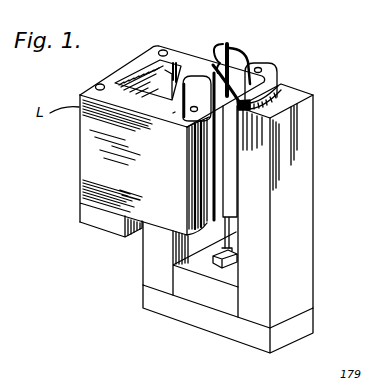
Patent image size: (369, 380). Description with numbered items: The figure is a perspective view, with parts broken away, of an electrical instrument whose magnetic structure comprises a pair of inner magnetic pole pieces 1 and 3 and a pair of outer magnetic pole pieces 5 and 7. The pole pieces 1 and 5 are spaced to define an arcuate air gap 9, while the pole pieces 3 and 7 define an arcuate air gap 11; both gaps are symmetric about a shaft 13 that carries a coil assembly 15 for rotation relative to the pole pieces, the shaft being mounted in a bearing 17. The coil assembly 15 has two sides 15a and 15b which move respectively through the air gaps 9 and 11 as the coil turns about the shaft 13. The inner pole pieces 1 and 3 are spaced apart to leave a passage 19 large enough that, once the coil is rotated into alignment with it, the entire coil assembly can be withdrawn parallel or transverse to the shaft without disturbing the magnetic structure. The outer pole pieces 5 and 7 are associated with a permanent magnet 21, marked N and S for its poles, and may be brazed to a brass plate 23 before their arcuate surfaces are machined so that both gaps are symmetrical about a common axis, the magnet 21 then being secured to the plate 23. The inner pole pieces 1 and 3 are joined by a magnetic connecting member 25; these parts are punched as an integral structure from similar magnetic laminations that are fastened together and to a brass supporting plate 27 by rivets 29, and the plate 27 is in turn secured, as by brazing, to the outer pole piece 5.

The inner magnetic pole piece 1 is at (173, 113).
The inner magnetic pole piece 3 is at (268, 72).
The outer magnetic pole piece 5 is at (199, 70).
The outer magnetic pole piece 7 is at (314, 95).
The arcuate air gap 9 is at (144, 165).
The arcuate air gap 11 is at (291, 86).
The shaft 13 is at (232, 46).
The coil assembly 15 is at (247, 79).
The coil assembly side 15a is at (222, 39).
The coil assembly side 15b is at (249, 118).
The bearing 17 is at (211, 253).
The passage 19 is at (209, 93).
The permanent magnet 21 is at (198, 298).
The brass plate 23 is at (288, 327).
The magnetic connecting member 25 is at (150, 56).
The brass supporting plate 27 is at (97, 231).
The rivets 29 is at (92, 88).